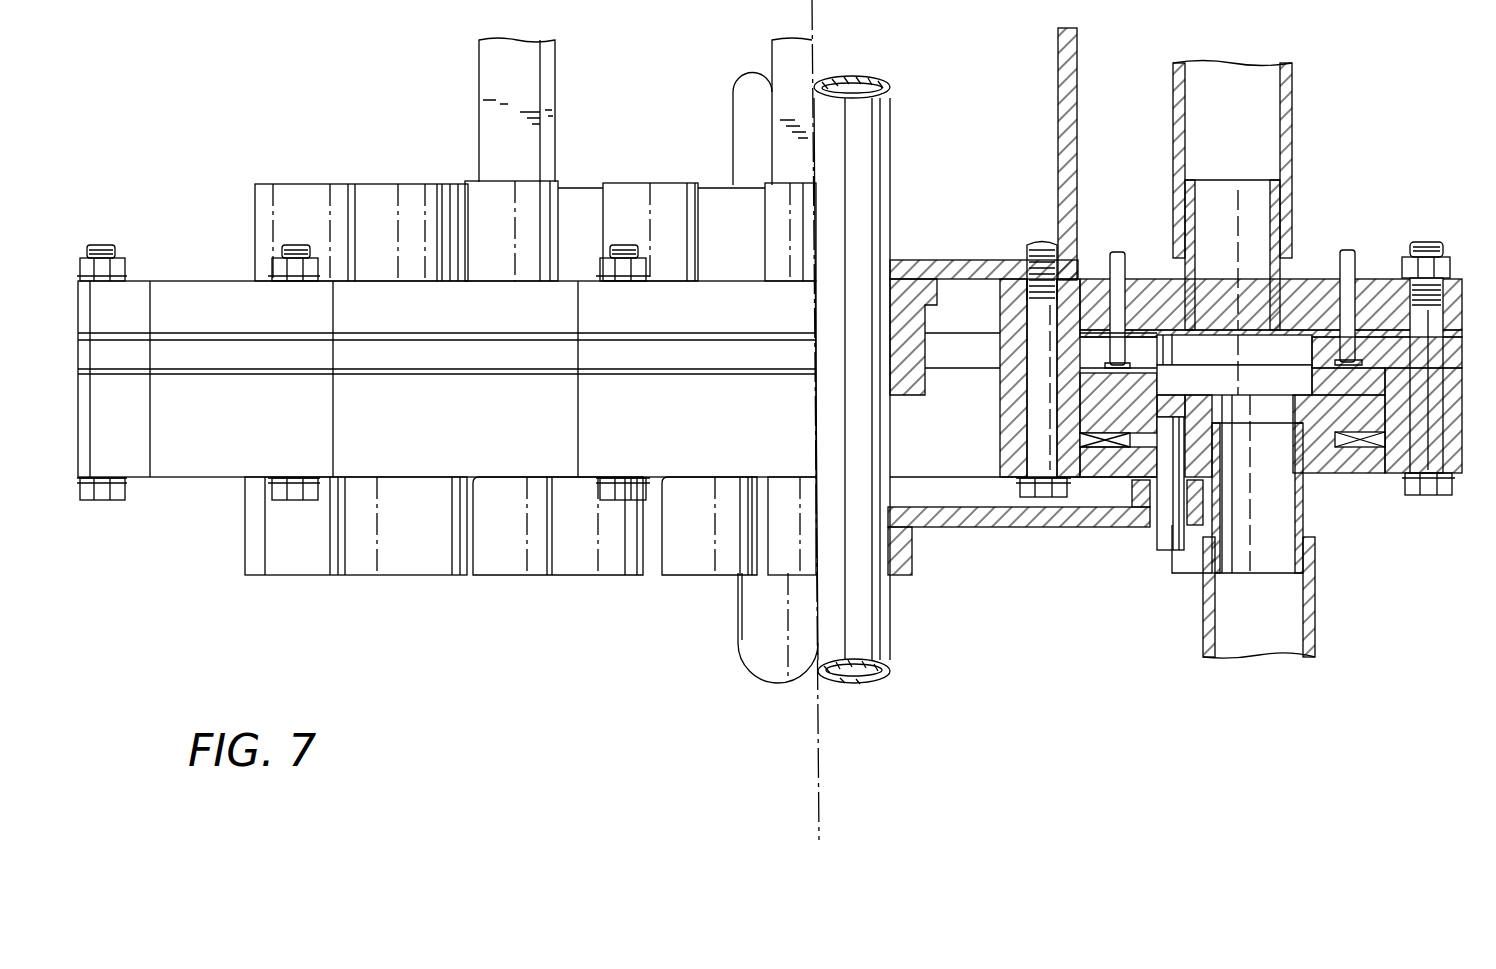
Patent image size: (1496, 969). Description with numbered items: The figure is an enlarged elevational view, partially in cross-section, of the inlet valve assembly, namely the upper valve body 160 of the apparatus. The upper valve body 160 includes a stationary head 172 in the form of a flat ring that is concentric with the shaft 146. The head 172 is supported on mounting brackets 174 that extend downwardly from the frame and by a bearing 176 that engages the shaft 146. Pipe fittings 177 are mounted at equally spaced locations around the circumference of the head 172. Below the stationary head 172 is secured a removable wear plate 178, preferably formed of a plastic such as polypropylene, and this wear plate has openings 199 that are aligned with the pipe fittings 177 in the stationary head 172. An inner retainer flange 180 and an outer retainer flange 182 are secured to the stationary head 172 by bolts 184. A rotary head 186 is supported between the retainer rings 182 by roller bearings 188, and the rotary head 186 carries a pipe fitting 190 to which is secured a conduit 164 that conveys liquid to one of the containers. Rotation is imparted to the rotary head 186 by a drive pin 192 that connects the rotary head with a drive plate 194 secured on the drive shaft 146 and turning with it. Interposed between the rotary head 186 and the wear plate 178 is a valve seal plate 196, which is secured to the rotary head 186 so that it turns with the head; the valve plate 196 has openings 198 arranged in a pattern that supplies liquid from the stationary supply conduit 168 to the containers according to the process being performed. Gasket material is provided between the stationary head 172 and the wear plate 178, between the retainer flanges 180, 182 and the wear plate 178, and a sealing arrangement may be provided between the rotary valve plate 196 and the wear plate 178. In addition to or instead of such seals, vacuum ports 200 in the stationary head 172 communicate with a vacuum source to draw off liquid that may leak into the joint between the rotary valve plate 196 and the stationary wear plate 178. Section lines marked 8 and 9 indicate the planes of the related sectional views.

The shaft 146 is at (862, 178).
The upper valve body 160 is at (226, 278).
The conduit 164 is at (1310, 630).
The stationary supply conduit 168 is at (1283, 150).
The stationary head 172 is at (133, 305).
The mounting brackets 174 is at (525, 90).
The bearing 176 is at (911, 302).
The pipe fittings 177 is at (1277, 205).
The wear plate 178 is at (178, 357).
The inner retainer flange 180 is at (1016, 440).
The outer retainer flange 182 is at (1397, 462).
The bolts 184 is at (111, 494).
The rotary head 186 is at (1322, 455).
The roller bearings 188 is at (1107, 452).
The pipe fitting 190 is at (1305, 528).
The drive pin 192 is at (1172, 516).
The drive plate 194 is at (945, 510).
The valve seal plate 196 is at (1088, 385).
The openings 198 is at (1160, 378).
The openings 199 is at (1160, 347).
The vacuum ports 200 is at (1118, 262).
The section line 8- 8 is at (985, 337).
The section line 9- 9 is at (970, 367).